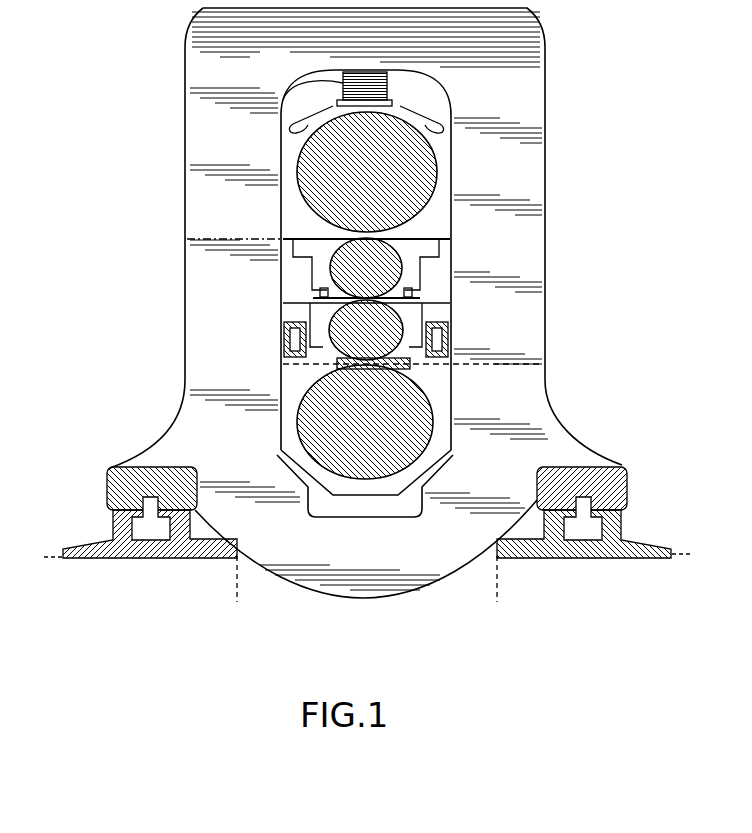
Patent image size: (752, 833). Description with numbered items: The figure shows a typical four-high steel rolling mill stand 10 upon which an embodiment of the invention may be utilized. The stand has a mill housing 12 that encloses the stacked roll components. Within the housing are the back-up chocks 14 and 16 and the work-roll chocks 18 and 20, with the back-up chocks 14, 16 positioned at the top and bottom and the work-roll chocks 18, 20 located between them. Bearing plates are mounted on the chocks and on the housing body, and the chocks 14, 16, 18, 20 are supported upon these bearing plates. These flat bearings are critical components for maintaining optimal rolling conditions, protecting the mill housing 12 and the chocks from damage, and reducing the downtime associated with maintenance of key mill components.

The steel rolling mill stand 10 is at (566, 57).
The mill housing 12 is at (546, 139).
The back-up chock 14 is at (405, 152).
The work-roll chock 18 is at (432, 238).
The work-roll chock 20 is at (305, 310).
The back-up chock 16 is at (292, 437).